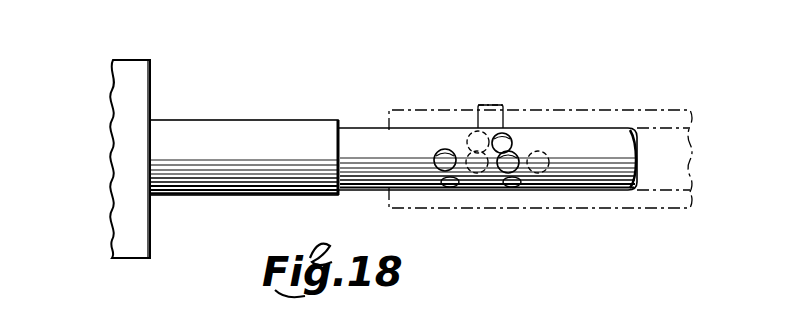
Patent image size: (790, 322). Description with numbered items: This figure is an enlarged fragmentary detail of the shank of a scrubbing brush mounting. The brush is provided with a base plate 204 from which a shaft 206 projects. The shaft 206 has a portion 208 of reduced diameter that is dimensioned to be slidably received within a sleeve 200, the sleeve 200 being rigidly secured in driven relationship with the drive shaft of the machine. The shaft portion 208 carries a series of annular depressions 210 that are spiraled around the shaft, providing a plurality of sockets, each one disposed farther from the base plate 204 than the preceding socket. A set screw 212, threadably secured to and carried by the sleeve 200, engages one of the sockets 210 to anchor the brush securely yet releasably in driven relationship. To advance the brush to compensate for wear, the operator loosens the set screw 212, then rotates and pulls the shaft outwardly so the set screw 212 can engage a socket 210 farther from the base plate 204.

The sleeve 200 is at (596, 118).
The base plate 204 is at (131, 64).
The shaft 206 is at (232, 122).
The portion of reduced diameter 208 is at (364, 132).
The annular depressions 210 is at (516, 181).
The set screw 212 is at (485, 119).